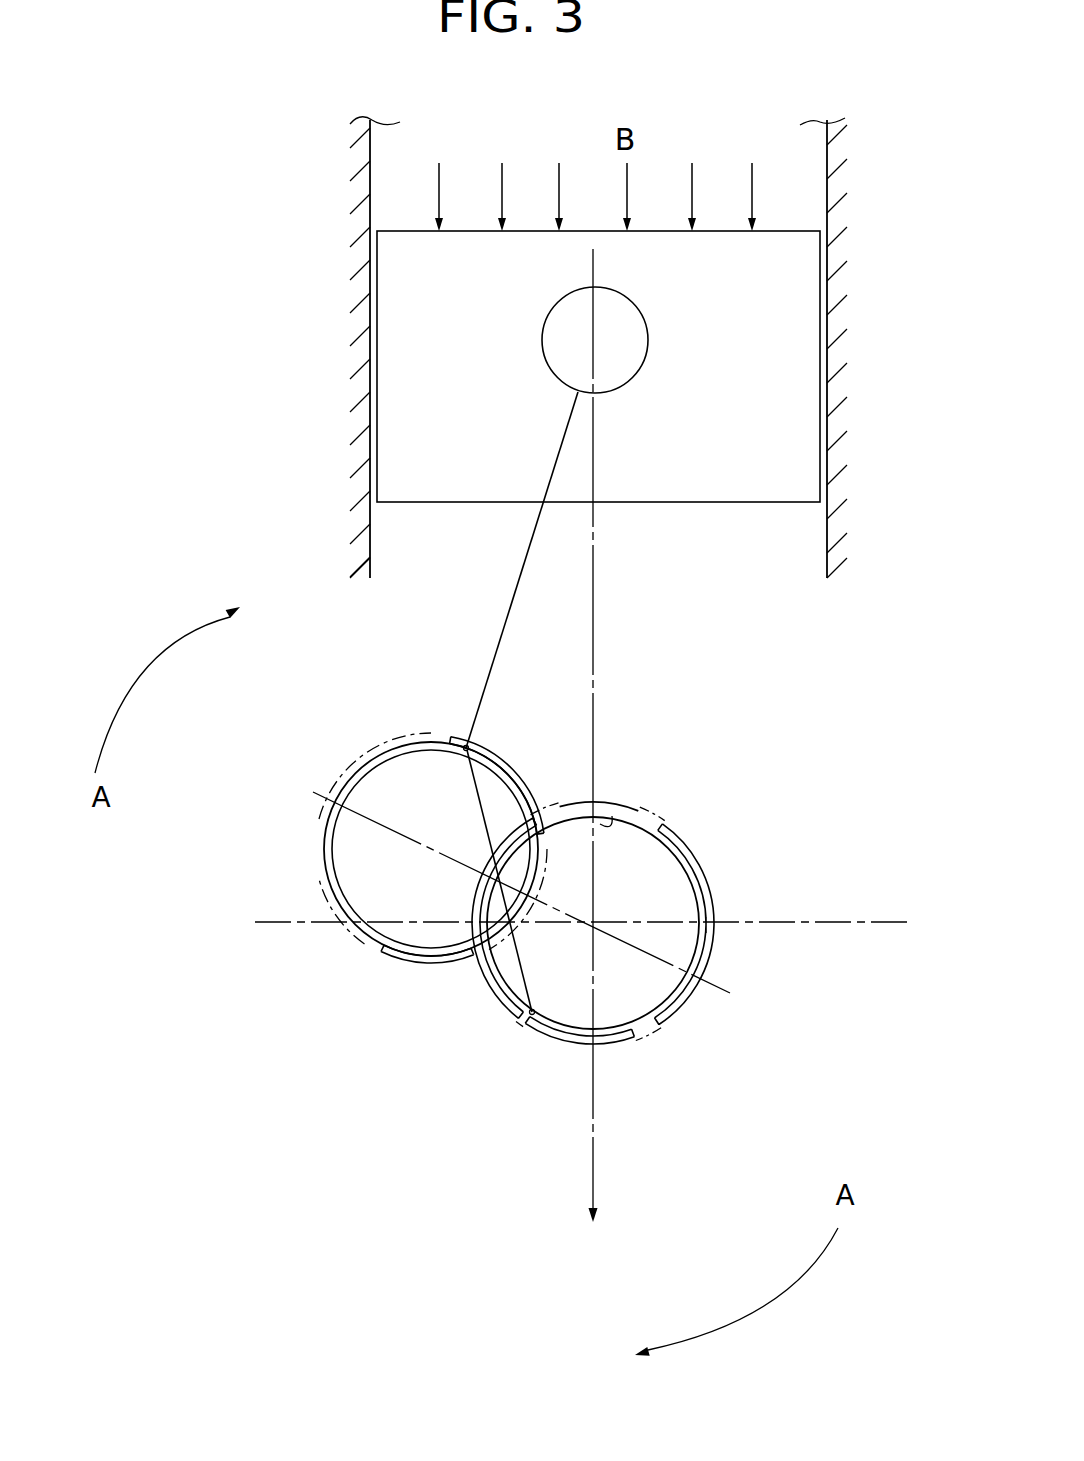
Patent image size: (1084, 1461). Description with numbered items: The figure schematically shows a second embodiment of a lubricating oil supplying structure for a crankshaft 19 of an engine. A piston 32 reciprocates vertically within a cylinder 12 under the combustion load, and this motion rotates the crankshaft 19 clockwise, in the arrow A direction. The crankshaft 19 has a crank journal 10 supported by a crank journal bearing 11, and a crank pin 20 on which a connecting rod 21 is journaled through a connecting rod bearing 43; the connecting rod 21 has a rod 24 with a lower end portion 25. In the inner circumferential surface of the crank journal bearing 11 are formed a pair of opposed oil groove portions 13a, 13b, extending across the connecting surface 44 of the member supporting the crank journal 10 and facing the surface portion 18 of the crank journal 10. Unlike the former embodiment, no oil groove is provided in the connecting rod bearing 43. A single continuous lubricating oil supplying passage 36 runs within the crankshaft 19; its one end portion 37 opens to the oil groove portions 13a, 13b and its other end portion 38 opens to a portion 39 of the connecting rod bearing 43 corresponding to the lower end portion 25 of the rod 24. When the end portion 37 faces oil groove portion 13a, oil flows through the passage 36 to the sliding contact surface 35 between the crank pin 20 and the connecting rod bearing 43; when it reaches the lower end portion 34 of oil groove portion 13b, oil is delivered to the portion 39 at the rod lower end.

The crank journal 10 is at (640, 889).
The crank journal bearing 11 is at (705, 867).
The cylinder 12 is at (368, 283).
The oil groove portion 13a is at (707, 937).
The oil groove portion 13b is at (488, 984).
The surface portion of the crank journal 18 is at (614, 815).
The crankshaft 19 is at (330, 1175).
The crank pin 20 is at (372, 871).
The connecting rod 21 is at (400, 556).
The rod 24 is at (508, 605).
The lower end portion of the rod 25 is at (458, 738).
The piston 32 is at (700, 349).
The lower end portion of the oil groove portion 34 is at (520, 1018).
The sliding contact surface 35 is at (385, 946).
The lubricating oil supplying passage 36 is at (560, 971).
The end portion of the lubricating oil supplying passage 37 is at (528, 1003).
The end portion of the lubricating oil supplying passage 38 is at (470, 776).
The portion of the connecting rod bearing 39 is at (465, 756).
The connecting rod bearing 43 is at (343, 918).
The connecting surface 44 is at (857, 922).